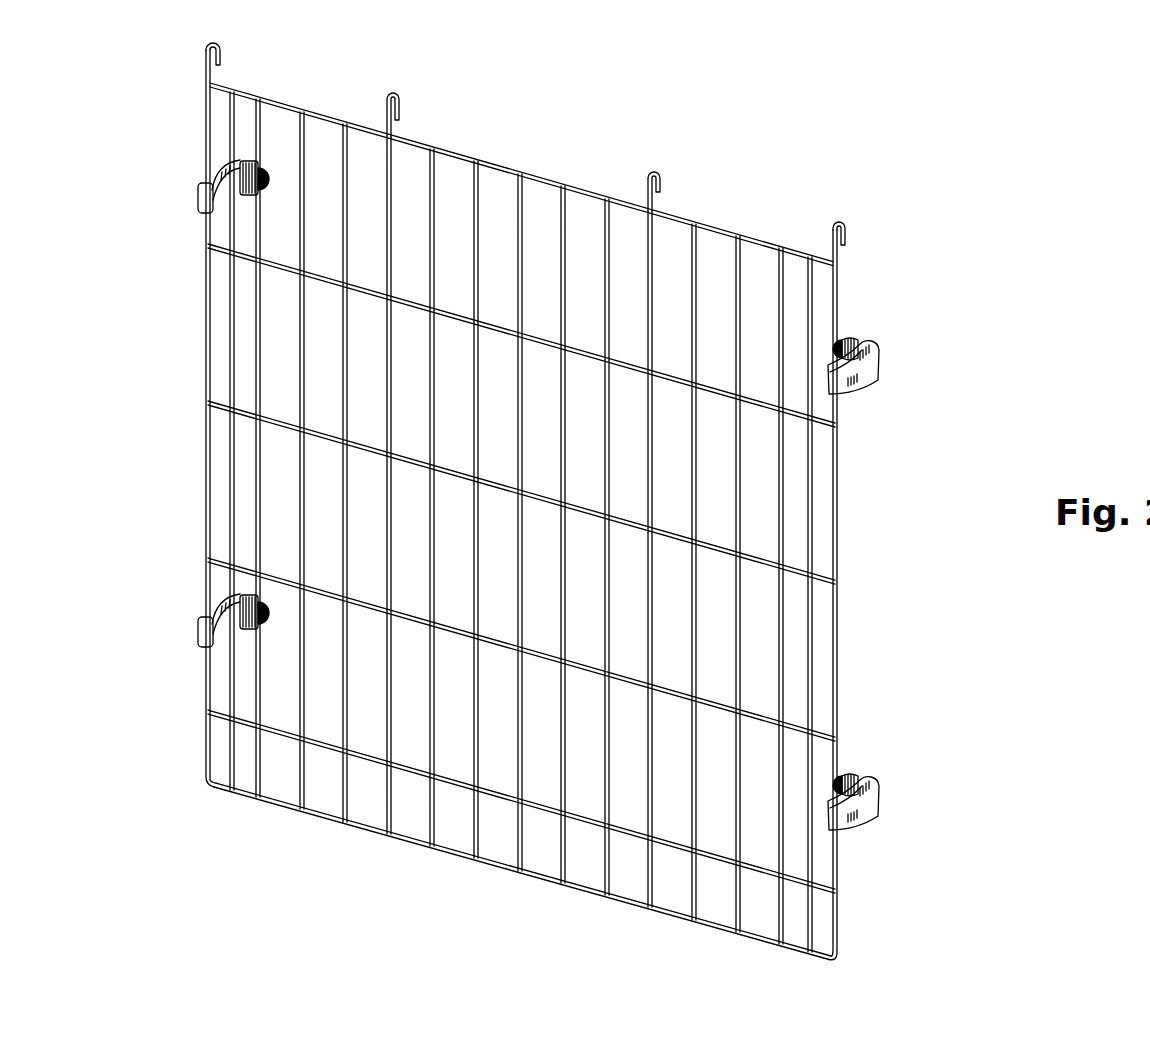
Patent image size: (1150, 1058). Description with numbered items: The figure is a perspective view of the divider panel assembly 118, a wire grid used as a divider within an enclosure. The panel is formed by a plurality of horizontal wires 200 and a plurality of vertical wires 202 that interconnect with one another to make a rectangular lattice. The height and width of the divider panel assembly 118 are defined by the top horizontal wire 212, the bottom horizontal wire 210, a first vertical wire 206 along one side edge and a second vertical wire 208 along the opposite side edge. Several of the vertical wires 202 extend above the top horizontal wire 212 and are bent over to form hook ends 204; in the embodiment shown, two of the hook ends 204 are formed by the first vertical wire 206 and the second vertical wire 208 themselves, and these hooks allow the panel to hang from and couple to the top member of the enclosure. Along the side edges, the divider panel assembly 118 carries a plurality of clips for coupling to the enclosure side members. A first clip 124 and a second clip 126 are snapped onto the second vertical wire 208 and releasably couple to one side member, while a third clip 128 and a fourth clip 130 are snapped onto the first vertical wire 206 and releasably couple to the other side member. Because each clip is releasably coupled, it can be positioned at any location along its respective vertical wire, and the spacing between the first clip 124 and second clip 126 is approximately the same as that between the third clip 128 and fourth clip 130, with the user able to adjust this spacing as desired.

The divider panel assembly 118 is at (940, 200).
The first clip 124 is at (880, 801).
The second clip 126 is at (882, 363).
The third clip 128 is at (198, 635).
The fourth clip 130 is at (202, 197).
The horizontal wires 200 is at (498, 326).
The vertical wires 202 is at (257, 333).
The hook ends 204 is at (205, 55).
The first vertical wire 206 is at (206, 482).
The second vertical wire 208 is at (840, 603).
The bottom horizontal wire 210 is at (413, 842).
The top horizontal wire 212 is at (281, 101).